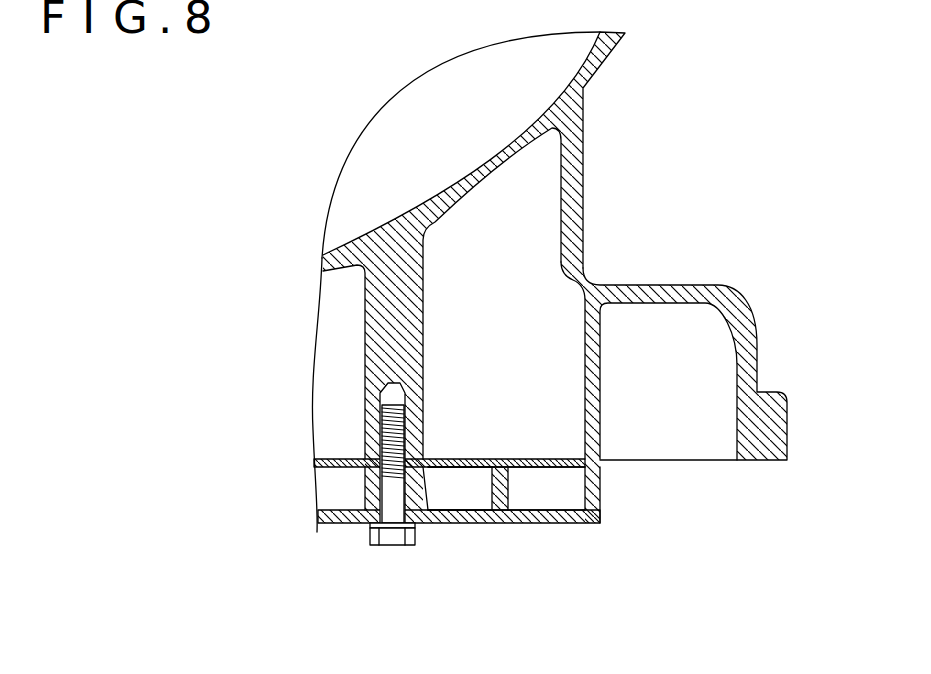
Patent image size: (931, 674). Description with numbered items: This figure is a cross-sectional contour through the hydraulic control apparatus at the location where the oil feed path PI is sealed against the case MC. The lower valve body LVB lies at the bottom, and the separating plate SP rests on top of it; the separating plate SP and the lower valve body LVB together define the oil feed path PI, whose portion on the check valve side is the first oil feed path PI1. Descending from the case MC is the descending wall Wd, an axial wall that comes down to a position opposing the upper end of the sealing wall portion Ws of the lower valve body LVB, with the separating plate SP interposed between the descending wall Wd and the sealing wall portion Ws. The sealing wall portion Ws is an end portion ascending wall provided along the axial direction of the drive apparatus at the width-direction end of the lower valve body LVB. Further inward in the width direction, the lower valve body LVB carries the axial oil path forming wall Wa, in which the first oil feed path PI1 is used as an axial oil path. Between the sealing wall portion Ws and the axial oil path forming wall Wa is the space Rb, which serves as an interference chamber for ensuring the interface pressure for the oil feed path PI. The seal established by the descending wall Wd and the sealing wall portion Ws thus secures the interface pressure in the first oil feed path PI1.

The case MC is at (585, 180).
The descending wall Wd is at (600, 397).
The sealing wall portion Ws is at (600, 487).
The separating plate SP is at (455, 460).
The axial oil path forming wall Wa is at (510, 485).
The space Rb is at (553, 486).
The first oil feed path PI1 is at (457, 485).
The oil feed path PI is at (460, 488).
The lower valve body LVB is at (348, 525).